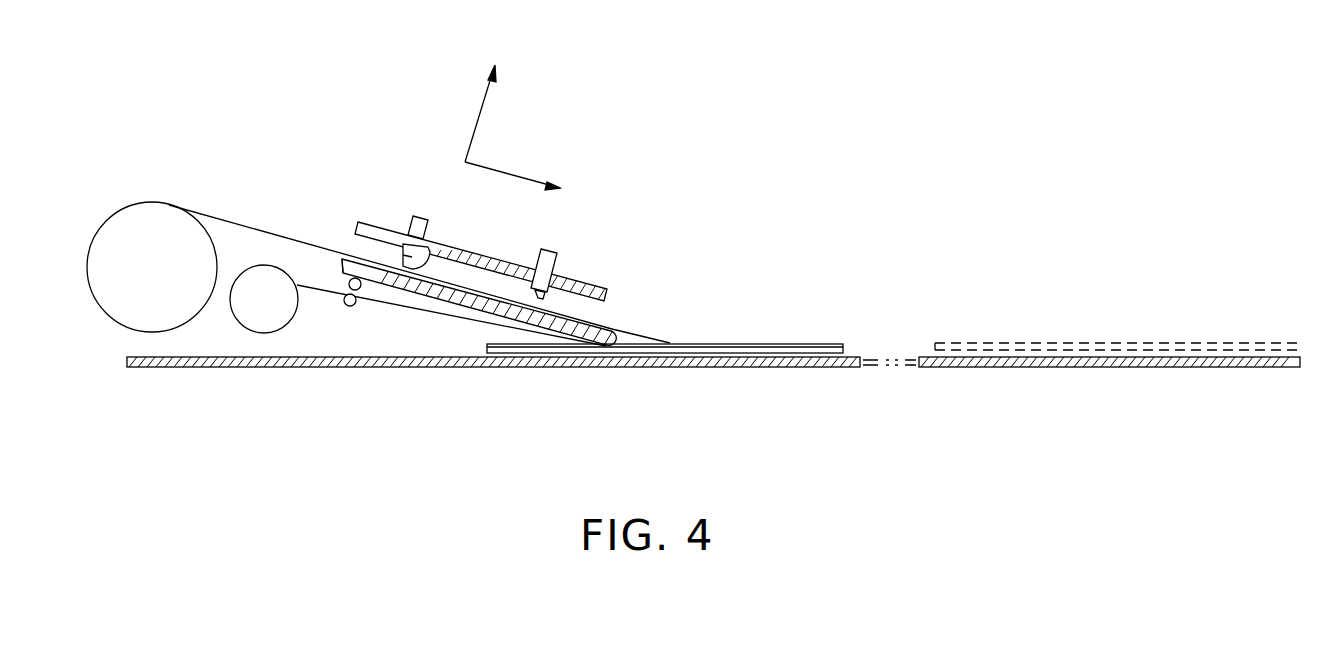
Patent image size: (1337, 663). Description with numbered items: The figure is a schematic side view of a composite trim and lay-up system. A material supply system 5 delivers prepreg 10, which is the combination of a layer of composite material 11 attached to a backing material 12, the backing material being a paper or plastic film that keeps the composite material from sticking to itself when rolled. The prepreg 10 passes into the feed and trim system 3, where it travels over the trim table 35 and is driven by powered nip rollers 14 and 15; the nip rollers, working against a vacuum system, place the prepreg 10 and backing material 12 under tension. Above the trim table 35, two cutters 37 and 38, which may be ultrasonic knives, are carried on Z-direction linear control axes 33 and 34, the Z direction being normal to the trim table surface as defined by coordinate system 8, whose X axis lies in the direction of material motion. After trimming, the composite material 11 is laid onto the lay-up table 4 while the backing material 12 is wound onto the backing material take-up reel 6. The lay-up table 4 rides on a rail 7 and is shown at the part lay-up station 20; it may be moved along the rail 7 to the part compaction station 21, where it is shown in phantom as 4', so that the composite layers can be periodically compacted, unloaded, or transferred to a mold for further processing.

The feed and trim system 3 is at (500, 254).
The lay-up table 4 is at (675, 329).
The lay-up table in phantom 4' is at (1117, 305).
The material supply system 5 is at (163, 282).
The backing material take-up reel 6 is at (274, 313).
The rail 7 is at (262, 368).
The coordinate system 8 is at (474, 126).
The prepreg 10 is at (300, 242).
The layer of composite material 11 is at (634, 330).
The backing material 12 is at (478, 321).
The powered nip roller 14 is at (358, 304).
The powered nip roller 15 is at (344, 283).
The part lay-up station 20 is at (506, 415).
The part compaction station 21 is at (1155, 386).
The Z-direction linear control axis 33 is at (558, 262).
The Z-direction linear control axis 34 is at (412, 214).
The trim table 35 is at (343, 263).
The cutter 37 is at (551, 298).
The cutter 38 is at (410, 247).